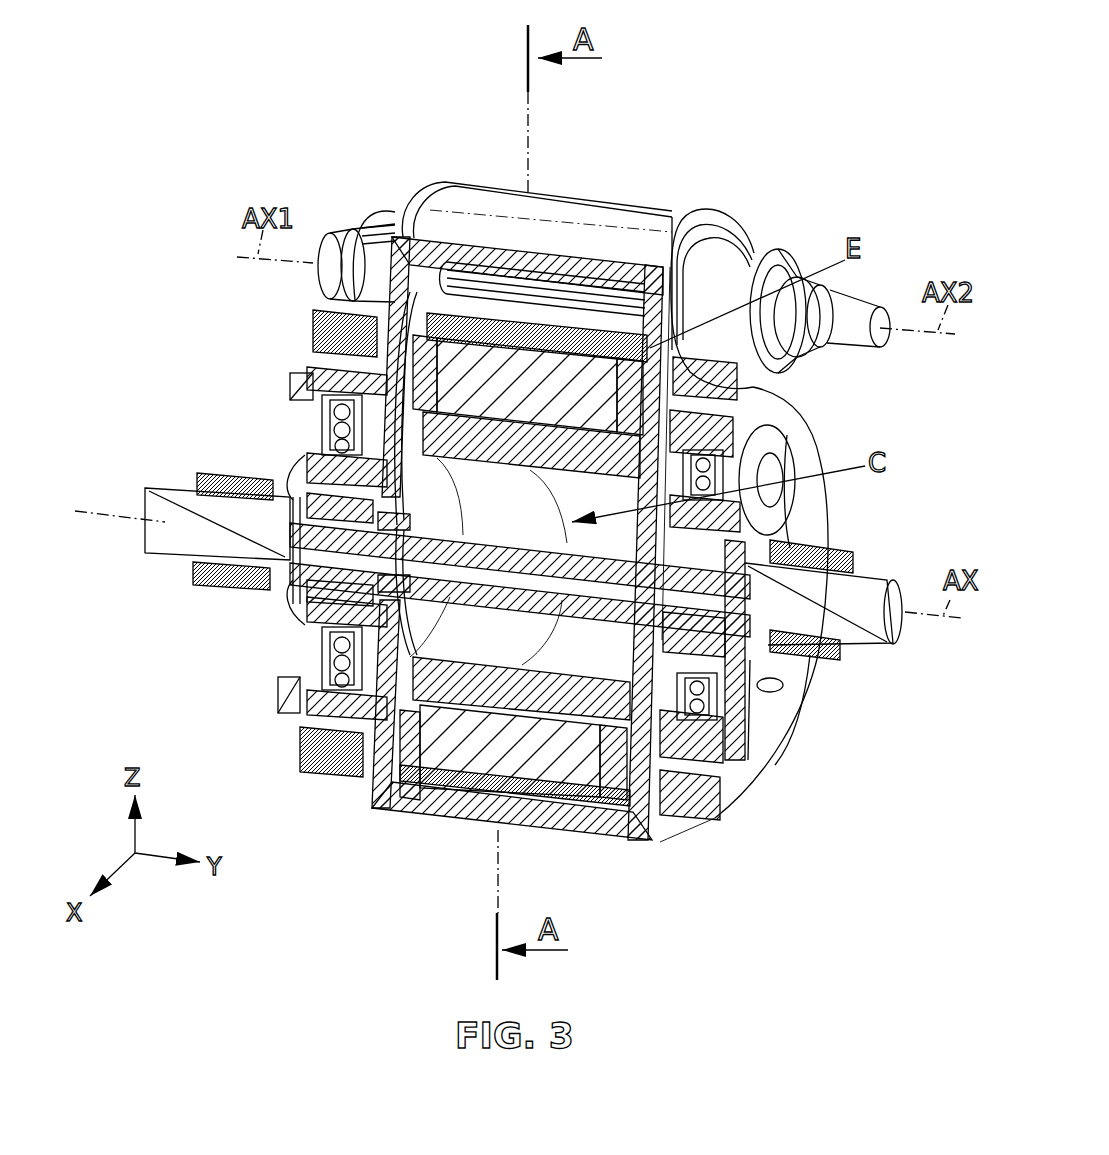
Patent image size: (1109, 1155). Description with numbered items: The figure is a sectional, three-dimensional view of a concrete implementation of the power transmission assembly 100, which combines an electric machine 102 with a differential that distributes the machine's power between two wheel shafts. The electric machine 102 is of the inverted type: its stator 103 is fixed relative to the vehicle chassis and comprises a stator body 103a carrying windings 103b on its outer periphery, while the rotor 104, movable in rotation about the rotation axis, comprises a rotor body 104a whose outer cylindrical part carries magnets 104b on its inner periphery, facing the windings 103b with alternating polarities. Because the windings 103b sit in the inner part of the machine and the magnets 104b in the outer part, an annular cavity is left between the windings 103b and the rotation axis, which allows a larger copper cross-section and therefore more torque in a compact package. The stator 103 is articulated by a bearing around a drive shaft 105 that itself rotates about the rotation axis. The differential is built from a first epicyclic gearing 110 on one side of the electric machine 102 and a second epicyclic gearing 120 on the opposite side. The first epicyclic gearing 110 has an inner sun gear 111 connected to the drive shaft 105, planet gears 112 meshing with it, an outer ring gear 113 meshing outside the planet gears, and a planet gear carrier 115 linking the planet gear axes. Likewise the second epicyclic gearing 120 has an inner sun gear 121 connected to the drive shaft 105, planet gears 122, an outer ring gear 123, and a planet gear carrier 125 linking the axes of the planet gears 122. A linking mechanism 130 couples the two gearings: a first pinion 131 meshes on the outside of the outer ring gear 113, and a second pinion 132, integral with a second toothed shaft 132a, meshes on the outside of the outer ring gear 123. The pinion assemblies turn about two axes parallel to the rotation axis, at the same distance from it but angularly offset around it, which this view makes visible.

The power transmission assembly 100 is at (850, 800).
The electric machine 102 is at (675, 392).
The stator 103 is at (510, 752).
The stator body 103a is at (377, 697).
The windings 103b is at (562, 382).
The rotor 104 is at (415, 325).
The rotor body 104a is at (397, 420).
The magnets 104b is at (472, 320).
The drive shaft 105 is at (210, 578).
The first epicyclic gearing 110 is at (341, 798).
The inner sun gear 111 is at (325, 578).
The planet gears 112 is at (333, 382).
The outer ring gear 113 is at (333, 330).
The planet gear carrier 115 is at (180, 507).
The second epicyclic gearing 120 is at (688, 846).
The inner sun gear 121 is at (708, 630).
The planet gears 122 is at (712, 528).
The outer ring gear 123 is at (728, 395).
The planet gear carrier 125 is at (860, 592).
The linking mechanism 130 is at (812, 212).
The first pinion 131 is at (378, 230).
The second pinion 132 is at (742, 266).
The second toothed shaft 132a is at (548, 270).